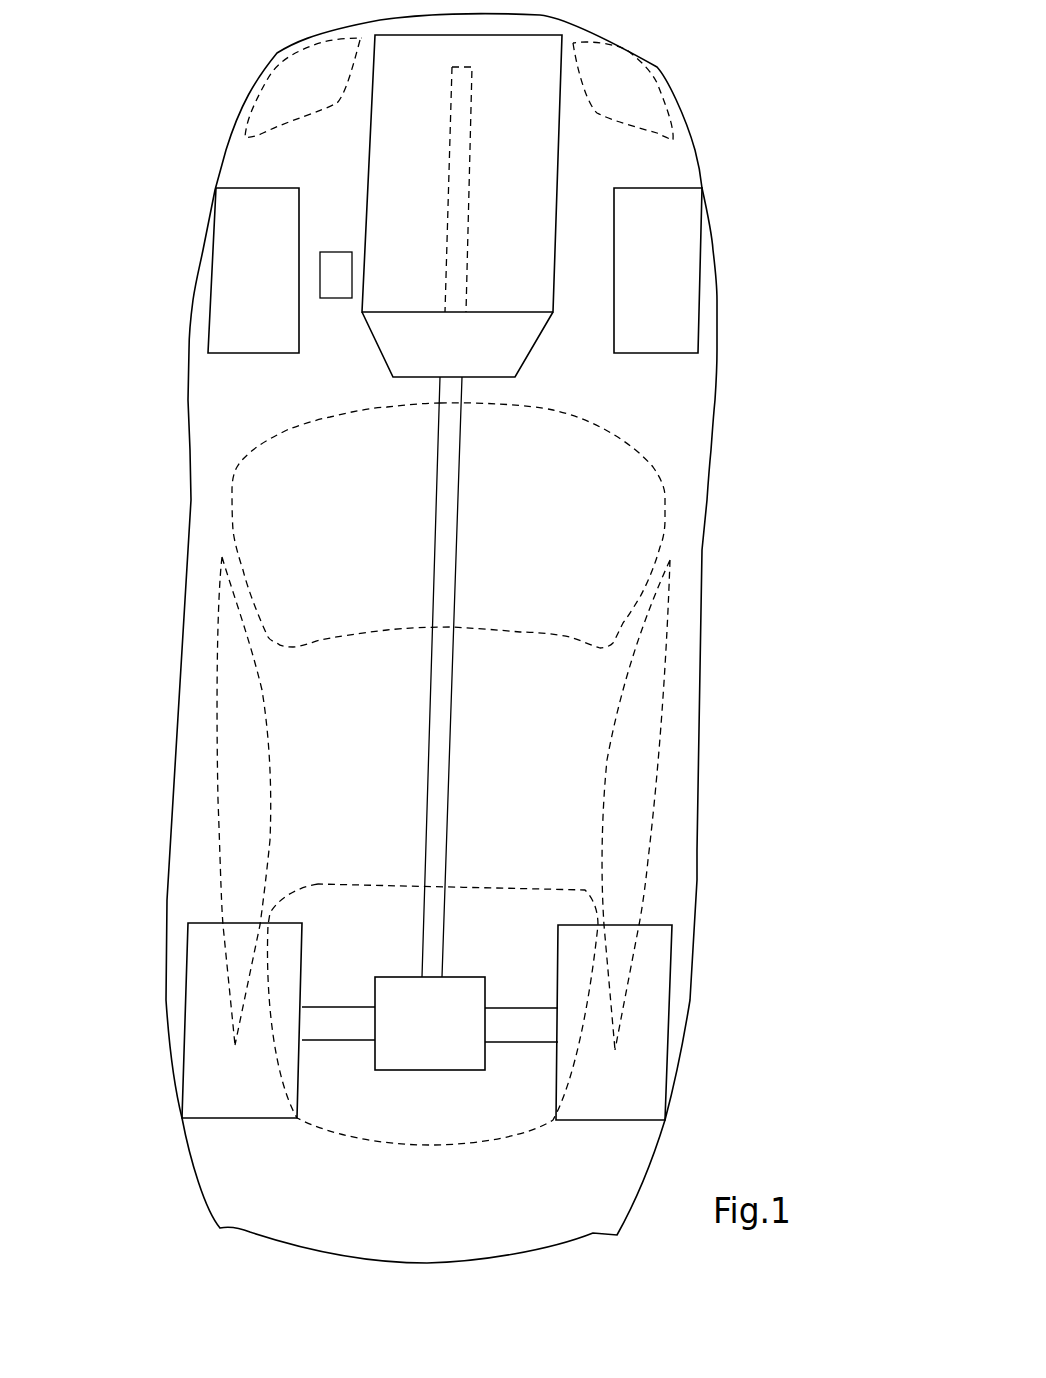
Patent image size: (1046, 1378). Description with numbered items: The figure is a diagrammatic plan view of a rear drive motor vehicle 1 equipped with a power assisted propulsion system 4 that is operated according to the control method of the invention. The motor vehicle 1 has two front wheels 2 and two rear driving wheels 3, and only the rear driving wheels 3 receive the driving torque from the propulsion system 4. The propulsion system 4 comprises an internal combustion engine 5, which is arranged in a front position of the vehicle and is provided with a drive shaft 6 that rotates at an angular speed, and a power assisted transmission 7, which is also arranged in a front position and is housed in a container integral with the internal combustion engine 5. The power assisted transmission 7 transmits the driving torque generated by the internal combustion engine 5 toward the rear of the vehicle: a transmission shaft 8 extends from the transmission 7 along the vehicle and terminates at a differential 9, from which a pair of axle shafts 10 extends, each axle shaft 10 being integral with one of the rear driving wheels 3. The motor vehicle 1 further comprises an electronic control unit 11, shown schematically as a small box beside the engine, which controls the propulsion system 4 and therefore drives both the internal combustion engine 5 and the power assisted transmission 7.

The motor vehicle 1 is at (159, 1119).
The front wheels 2 is at (220, 228).
The rear driving wheels 3 is at (195, 1013).
The propulsion system 4 is at (717, 108).
The internal combustion engine 5 is at (538, 112).
The drive shaft 6 is at (447, 80).
The power assisted transmission 7 is at (513, 372).
The transmission shaft 8 is at (450, 532).
The differential 9 is at (435, 1062).
The axle shafts 10 is at (337, 1033).
The electronic control unit 11 is at (336, 262).